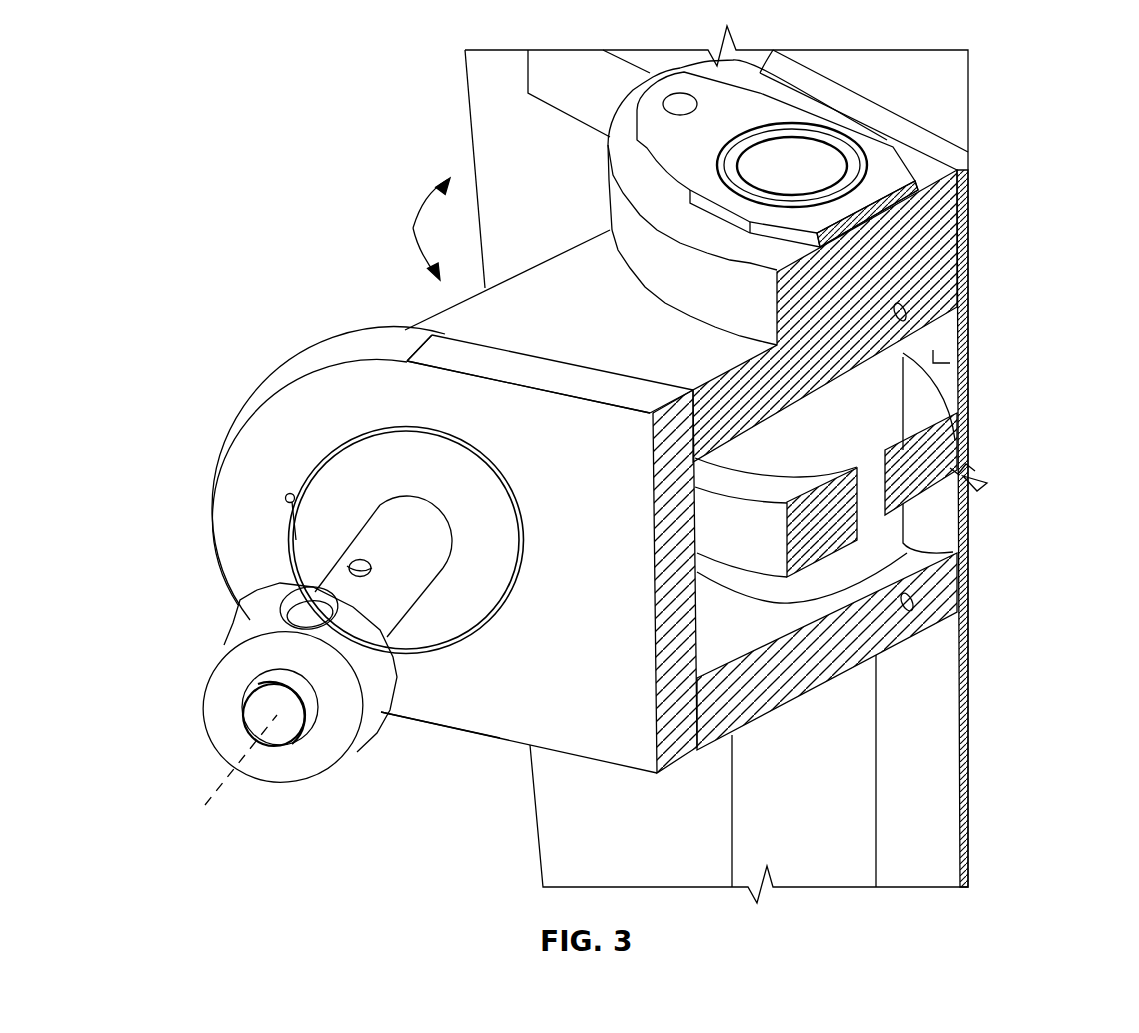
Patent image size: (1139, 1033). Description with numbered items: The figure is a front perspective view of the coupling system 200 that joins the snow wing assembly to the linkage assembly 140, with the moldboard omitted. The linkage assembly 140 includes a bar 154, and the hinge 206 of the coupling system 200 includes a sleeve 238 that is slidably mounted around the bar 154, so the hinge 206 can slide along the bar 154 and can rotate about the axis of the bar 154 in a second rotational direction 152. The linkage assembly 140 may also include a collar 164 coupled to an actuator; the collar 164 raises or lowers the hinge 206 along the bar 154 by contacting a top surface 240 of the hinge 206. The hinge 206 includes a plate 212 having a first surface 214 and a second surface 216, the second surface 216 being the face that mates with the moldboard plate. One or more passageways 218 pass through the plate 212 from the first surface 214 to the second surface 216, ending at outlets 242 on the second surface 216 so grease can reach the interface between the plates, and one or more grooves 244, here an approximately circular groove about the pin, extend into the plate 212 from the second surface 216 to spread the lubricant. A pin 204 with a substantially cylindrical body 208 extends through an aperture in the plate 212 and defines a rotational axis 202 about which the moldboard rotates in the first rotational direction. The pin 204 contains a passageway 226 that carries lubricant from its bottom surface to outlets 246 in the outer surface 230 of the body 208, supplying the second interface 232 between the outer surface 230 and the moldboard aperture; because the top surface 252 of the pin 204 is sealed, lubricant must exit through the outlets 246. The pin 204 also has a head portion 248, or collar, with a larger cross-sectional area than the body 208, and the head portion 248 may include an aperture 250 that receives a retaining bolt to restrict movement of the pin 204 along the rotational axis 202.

The linkage assembly 140 is at (1001, 252).
The second rotational direction 152 is at (413, 228).
The bar 154 is at (838, 777).
The collar 164 is at (917, 477).
The coupling system 200 is at (357, 167).
The rotational axis 202 is at (210, 800).
The pin 204 is at (427, 565).
The hinge 206 is at (445, 330).
The body 208 is at (400, 602).
The plate 212 is at (300, 358).
The first surface 214 is at (343, 332).
The second surface 216 is at (537, 423).
The passageway 218 is at (290, 498).
The passageway 226 is at (370, 572).
The outer surface 230 is at (363, 546).
The second interface 232 is at (387, 552).
The sleeve 238 is at (877, 553).
The top surface 240 is at (913, 345).
The outlet 242 is at (285, 497).
The groove 244 is at (365, 431).
The outlet 246 is at (347, 566).
The head portion 248 is at (370, 700).
The aperture 250 is at (297, 618).
The top surface 252 is at (257, 717).